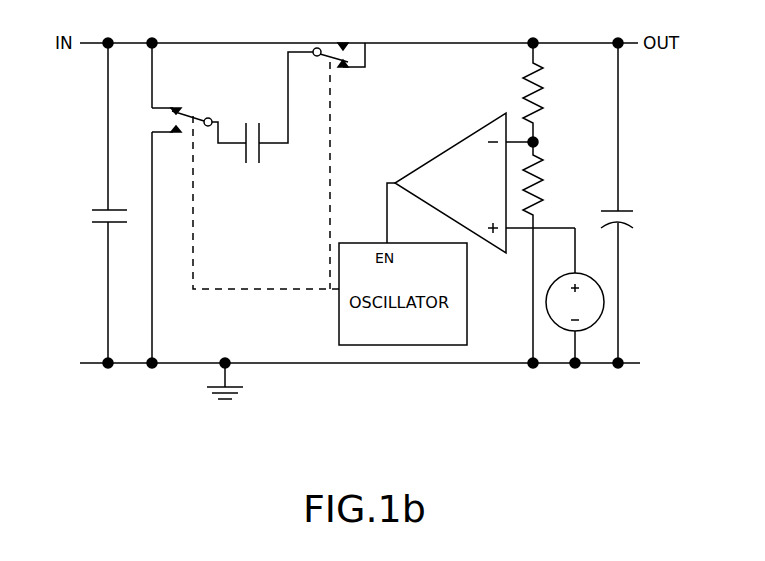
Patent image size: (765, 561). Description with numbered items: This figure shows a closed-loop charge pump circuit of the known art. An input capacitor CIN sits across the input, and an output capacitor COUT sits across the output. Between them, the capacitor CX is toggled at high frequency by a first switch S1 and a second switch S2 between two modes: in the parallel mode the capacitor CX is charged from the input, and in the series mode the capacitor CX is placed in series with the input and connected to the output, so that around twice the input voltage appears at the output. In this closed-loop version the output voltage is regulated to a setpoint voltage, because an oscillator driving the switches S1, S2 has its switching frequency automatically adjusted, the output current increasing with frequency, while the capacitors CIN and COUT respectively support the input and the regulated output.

The input capacitor CIN is at (91, 203).
The first switch S1 is at (170, 203).
The capacitor Cx CX is at (262, 107).
The second switch S2 is at (339, 42).
The output capacitor COUT is at (639, 203).